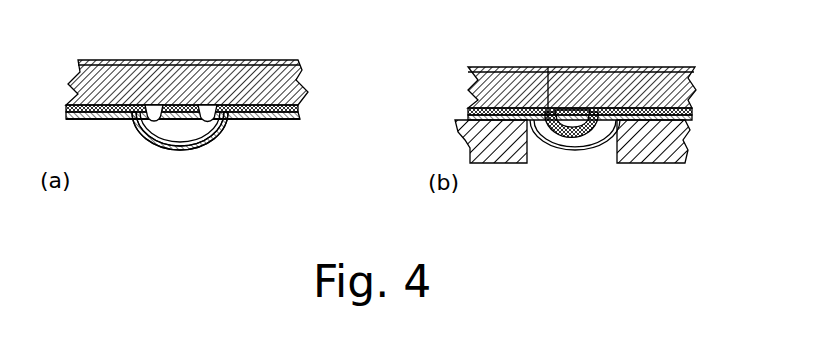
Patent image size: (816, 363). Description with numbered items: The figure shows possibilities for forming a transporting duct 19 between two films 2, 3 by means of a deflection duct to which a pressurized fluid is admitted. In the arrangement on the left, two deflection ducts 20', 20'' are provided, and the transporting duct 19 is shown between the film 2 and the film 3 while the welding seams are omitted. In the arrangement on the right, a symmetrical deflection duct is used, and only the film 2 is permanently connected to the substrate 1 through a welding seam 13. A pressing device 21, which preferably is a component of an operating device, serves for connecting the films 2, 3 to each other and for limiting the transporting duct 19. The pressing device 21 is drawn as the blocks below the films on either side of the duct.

The substrate 1 is at (468, 88).
The film 2 is at (300, 110).
The film 3 is at (290, 119).
The welding seam 13 is at (548, 68).
The transporting duct 19 is at (181, 124).
The deflection duct 20' is at (139, 155).
The deflection duct 20'' is at (234, 145).
The pressing device 21 is at (640, 163).